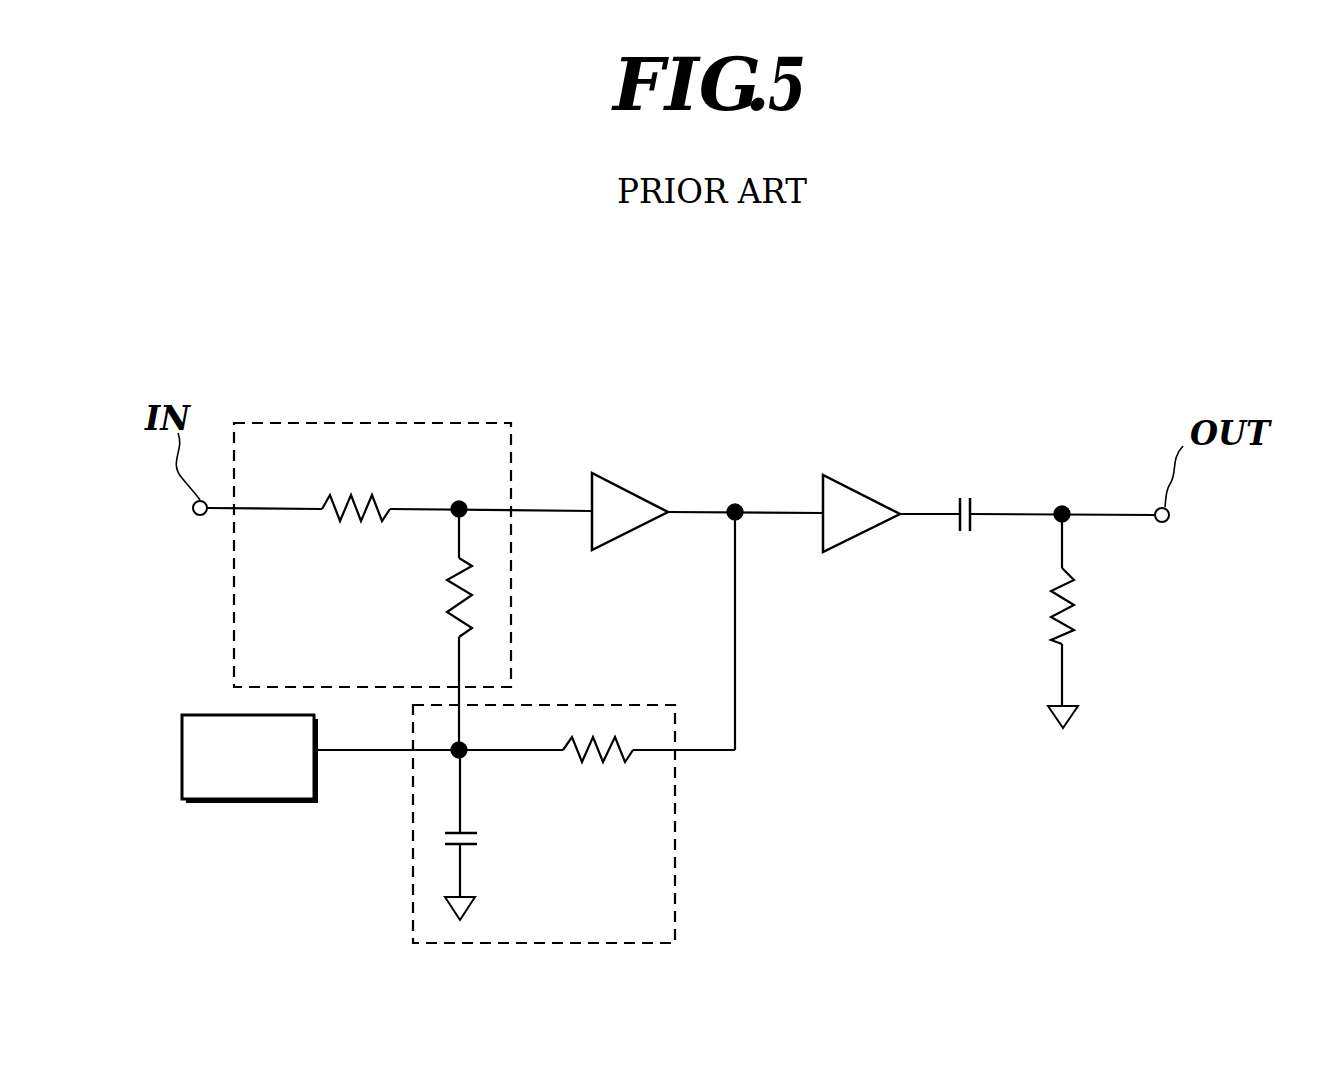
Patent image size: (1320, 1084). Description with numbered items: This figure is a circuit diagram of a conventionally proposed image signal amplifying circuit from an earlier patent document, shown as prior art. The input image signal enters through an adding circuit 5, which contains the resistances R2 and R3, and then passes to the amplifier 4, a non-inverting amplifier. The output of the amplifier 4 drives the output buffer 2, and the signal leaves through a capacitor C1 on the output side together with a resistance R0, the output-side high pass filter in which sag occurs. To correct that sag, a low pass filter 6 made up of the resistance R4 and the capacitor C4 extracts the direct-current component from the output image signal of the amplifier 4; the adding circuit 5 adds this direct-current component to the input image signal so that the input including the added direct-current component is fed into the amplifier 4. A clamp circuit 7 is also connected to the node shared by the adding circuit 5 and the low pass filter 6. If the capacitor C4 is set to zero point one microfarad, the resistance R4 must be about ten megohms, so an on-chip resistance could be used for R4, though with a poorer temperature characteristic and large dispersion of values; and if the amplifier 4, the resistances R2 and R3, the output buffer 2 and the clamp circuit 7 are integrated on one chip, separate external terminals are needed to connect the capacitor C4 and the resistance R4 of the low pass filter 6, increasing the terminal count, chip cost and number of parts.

The output buffer 2 is at (858, 489).
The amplifier 4 is at (628, 491).
The adding circuit 5 is at (372, 541).
The low pass filter 6 is at (589, 727).
The clamp circuit 7 is at (261, 801).
The resistance R2 is at (356, 532).
The resistance R3 is at (436, 629).
The resistance R4 is at (597, 664).
The resistor R0 is at (1089, 621).
The capacitor C1 is at (965, 543).
The capacitor C4 is at (485, 835).